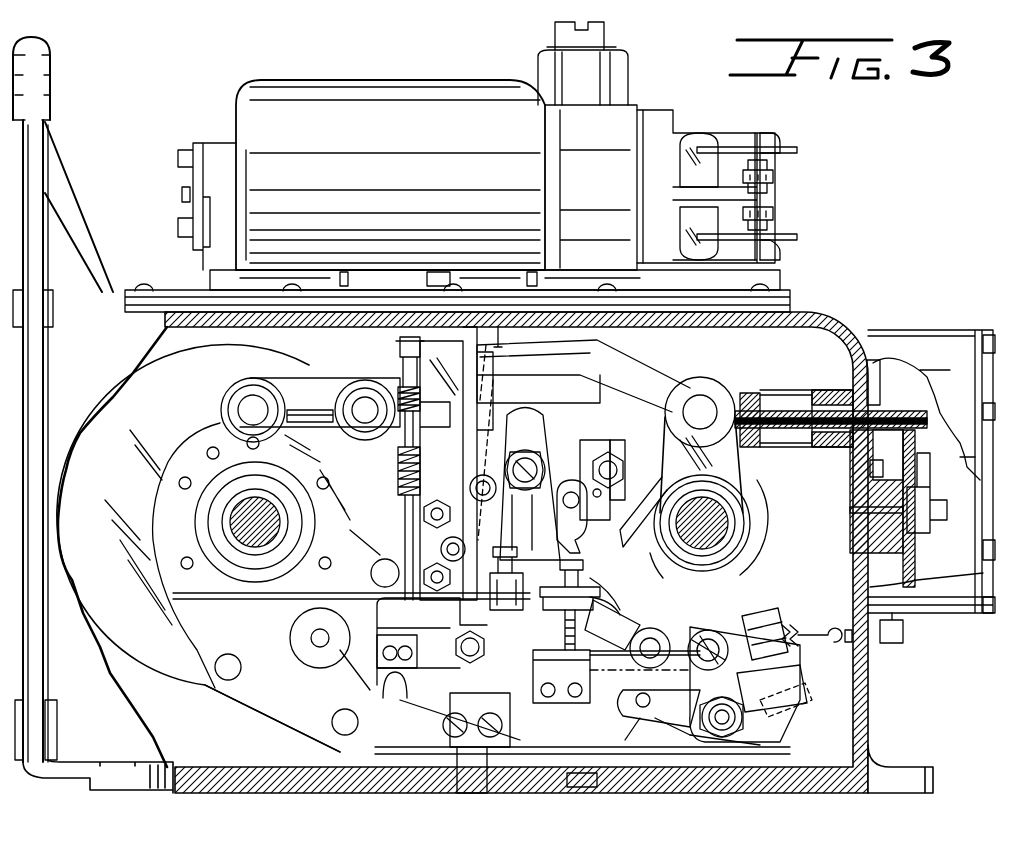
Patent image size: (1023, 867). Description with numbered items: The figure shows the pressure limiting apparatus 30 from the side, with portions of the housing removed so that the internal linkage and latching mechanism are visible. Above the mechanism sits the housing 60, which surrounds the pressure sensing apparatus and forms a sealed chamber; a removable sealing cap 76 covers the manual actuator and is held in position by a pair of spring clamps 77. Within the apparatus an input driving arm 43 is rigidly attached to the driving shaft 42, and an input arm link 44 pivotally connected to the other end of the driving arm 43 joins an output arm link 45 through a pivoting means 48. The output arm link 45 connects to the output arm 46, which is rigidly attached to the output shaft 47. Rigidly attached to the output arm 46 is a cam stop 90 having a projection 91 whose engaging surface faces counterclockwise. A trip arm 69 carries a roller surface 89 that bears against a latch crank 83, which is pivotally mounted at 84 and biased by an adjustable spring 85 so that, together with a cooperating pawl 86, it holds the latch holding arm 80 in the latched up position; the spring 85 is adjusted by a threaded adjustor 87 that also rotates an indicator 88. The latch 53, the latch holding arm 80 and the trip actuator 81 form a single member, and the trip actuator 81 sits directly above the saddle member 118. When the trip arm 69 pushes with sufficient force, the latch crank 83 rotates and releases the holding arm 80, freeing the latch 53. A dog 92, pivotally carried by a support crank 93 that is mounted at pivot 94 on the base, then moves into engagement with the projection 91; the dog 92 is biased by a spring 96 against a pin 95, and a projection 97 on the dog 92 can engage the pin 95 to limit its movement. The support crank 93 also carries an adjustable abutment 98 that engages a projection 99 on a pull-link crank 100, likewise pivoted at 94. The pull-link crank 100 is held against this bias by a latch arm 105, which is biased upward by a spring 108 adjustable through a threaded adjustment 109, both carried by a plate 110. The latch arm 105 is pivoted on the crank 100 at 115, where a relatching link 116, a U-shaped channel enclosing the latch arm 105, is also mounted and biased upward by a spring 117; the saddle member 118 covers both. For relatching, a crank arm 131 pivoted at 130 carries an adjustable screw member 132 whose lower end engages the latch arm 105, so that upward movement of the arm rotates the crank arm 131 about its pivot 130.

The pressure limiting apparatus 30 is at (845, 322).
The driving shaft 42 is at (232, 526).
The input driving arm 43 is at (222, 413).
The input arm link 44 is at (290, 392).
The output arm link 45 is at (625, 372).
The output arm 46 is at (737, 460).
The output shaft 47 is at (730, 523).
The pivoting means 48 is at (365, 397).
The latch 53 is at (466, 540).
The housing 60 is at (358, 90).
The trip arm 69 is at (500, 343).
The removable sealing cap 76 is at (775, 170).
The spring clamps 77 is at (797, 149).
The latch holding arm 80 is at (580, 522).
The trip actuator 81 is at (597, 600).
The latch crank 83 is at (578, 467).
The pivot 84 is at (537, 458).
The adjustable spring 85 is at (742, 395).
The pawl 86 is at (625, 474).
The threaded adjustor 87 is at (888, 400).
The indicator 88 is at (912, 452).
The roller surface 89 is at (483, 479).
The cam stop 90 is at (762, 544).
The projection 91 is at (598, 580).
The dog 92 is at (630, 622).
The support crank 93 is at (648, 733).
The pivot 94 is at (740, 722).
The pin 95 is at (623, 712).
The spring 96 is at (790, 625).
The projection 97 is at (700, 738).
The adjustable abutment 98 is at (745, 625).
The projection 99 is at (790, 668).
The pull-link crank 100 is at (790, 692).
The latch arm 105 is at (375, 578).
The spring 108 is at (398, 485).
The threaded adjustment 109 is at (398, 352).
The plate 110 is at (371, 457).
The pivot 115 is at (703, 645).
The relatching link 116 is at (533, 696).
The spring 117 is at (383, 690).
The saddle member 118 is at (540, 712).
The pivot 130 is at (428, 698).
The crank arm 131 is at (475, 722).
The adjustable screw member 132 is at (583, 570).